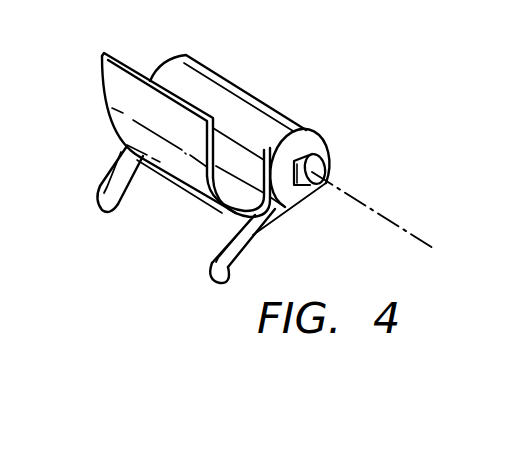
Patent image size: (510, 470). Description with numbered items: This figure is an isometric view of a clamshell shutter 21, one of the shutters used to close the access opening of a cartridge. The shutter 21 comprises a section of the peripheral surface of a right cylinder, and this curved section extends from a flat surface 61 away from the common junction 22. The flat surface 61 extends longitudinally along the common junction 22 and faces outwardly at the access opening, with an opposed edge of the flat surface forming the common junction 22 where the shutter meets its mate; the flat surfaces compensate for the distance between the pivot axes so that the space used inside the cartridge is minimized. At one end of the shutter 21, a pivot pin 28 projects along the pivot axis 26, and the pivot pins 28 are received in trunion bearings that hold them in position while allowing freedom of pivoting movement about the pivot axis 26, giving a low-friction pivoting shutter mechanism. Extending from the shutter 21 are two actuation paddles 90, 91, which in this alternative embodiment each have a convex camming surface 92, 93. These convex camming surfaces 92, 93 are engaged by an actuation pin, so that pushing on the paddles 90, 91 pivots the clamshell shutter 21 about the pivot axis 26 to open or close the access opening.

The clamshell shutter 21 is at (180, 184).
The common junction 22 is at (125, 64).
The pivot axis 26 is at (375, 211).
The pivot pin 28 is at (325, 167).
The flat surface 61 is at (107, 82).
The actuation paddle 90 is at (255, 235).
The actuation paddle 91 is at (113, 167).
The convex camming surface 92 is at (214, 266).
The convex camming surface 93 is at (97, 197).